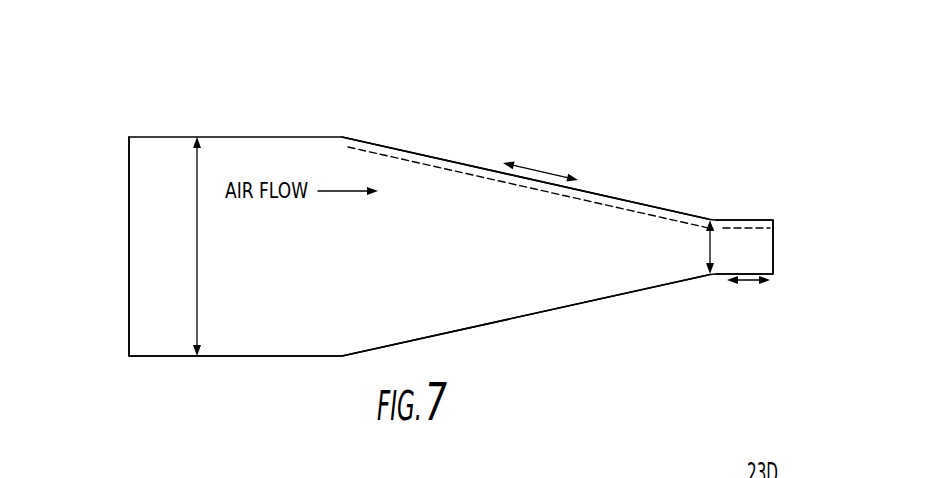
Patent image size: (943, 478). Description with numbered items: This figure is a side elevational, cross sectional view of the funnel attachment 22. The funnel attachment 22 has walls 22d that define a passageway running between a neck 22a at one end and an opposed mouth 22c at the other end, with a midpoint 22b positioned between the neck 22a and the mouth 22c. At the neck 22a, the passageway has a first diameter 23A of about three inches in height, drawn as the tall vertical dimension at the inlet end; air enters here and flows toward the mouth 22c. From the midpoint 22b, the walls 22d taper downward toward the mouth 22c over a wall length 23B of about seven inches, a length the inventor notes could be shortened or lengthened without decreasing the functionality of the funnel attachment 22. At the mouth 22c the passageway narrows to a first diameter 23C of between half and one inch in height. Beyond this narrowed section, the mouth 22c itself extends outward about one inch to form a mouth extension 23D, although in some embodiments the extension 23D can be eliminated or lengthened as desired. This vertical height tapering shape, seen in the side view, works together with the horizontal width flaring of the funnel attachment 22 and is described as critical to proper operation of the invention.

The funnel attachment 22 is at (598, 107).
The neck 22a is at (122, 125).
The midpoint 22b is at (366, 130).
The mouth 22c is at (797, 231).
The walls 22d is at (272, 357).
The first diameter of the neck 23A is at (199, 256).
The wall length 23B is at (546, 172).
The first diameter at the mouth 23C is at (706, 250).
The mouth extension 23D is at (750, 284).